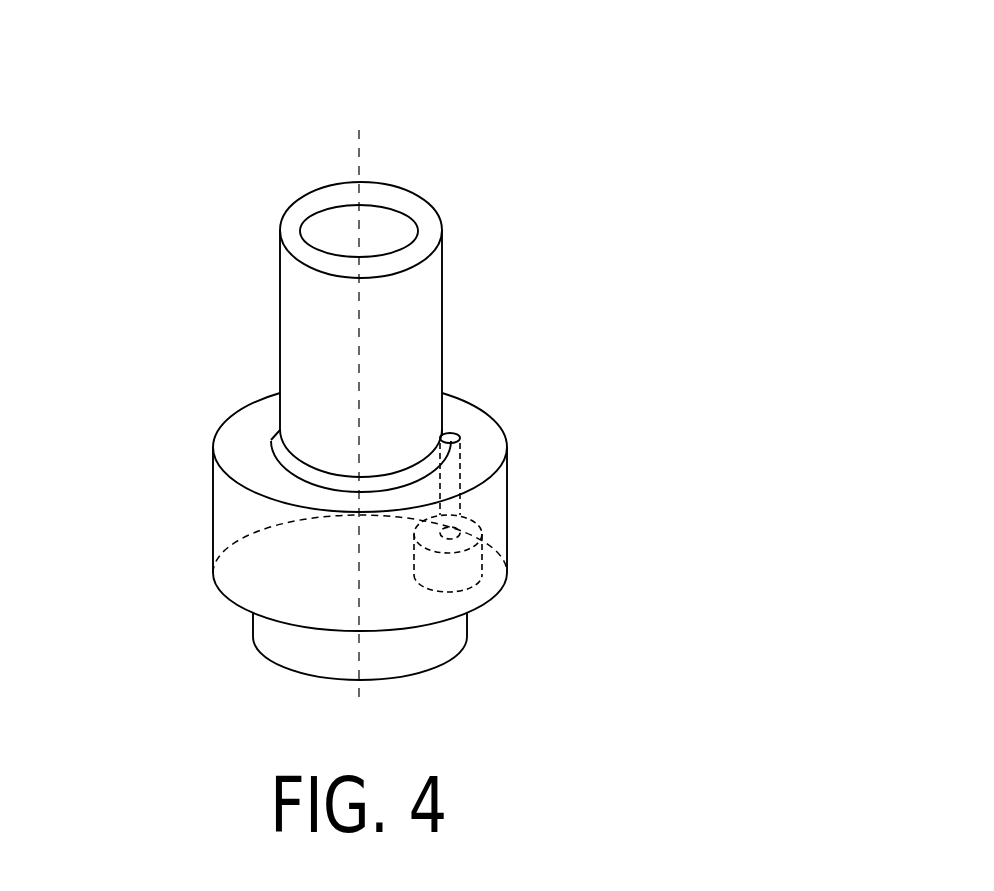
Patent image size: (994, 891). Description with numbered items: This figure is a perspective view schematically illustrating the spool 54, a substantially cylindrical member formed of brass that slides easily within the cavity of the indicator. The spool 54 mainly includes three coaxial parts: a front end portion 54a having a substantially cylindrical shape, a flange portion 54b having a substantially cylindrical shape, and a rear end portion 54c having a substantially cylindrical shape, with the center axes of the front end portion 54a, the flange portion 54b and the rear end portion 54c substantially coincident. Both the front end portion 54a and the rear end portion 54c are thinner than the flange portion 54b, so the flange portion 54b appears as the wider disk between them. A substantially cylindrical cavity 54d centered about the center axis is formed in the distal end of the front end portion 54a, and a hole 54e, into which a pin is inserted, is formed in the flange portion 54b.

The spool 54 is at (587, 82).
The front end portion 54a is at (114, 374).
The flange portion 54b is at (114, 487).
The rear end portion 54c is at (114, 610).
The cavity 54d is at (504, 169).
The hole 54e is at (470, 530).